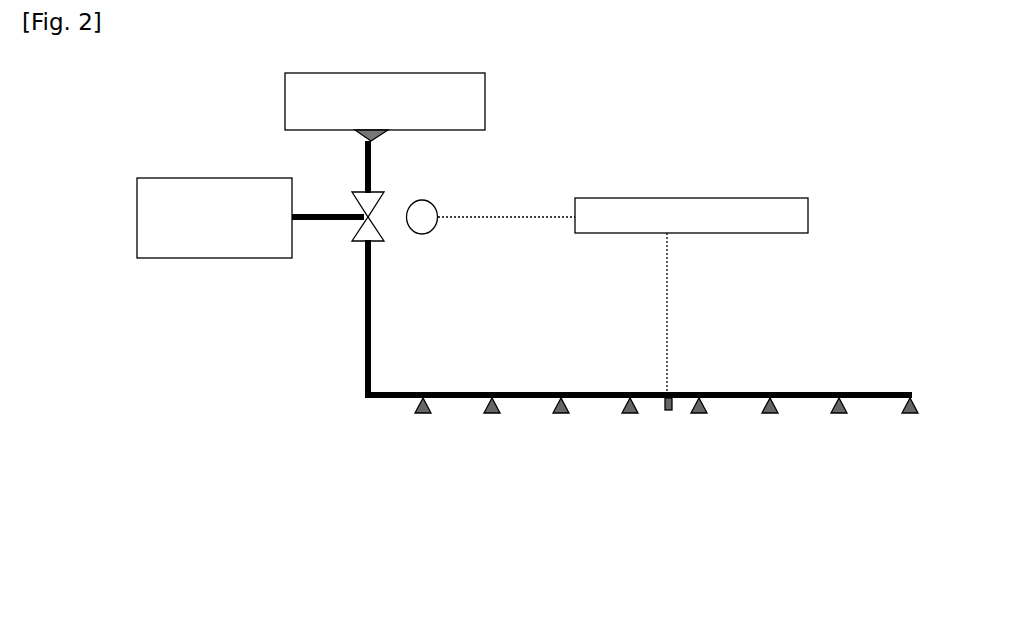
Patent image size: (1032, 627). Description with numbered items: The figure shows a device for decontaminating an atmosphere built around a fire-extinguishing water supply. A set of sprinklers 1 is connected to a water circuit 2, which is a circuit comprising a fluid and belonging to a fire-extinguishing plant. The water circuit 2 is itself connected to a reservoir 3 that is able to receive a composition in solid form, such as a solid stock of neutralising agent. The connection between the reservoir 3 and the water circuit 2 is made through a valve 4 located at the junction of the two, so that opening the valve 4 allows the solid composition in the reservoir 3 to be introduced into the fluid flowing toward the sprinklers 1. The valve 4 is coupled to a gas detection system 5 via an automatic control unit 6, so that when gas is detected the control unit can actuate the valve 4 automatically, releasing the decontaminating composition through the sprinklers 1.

The sprinklers 1 is at (409, 406).
The water circuit 2 is at (137, 216).
The reservoir 3 is at (487, 99).
The valve 4 is at (344, 245).
The gas detection system 5 is at (670, 418).
The automatic control unit 6 is at (809, 215).